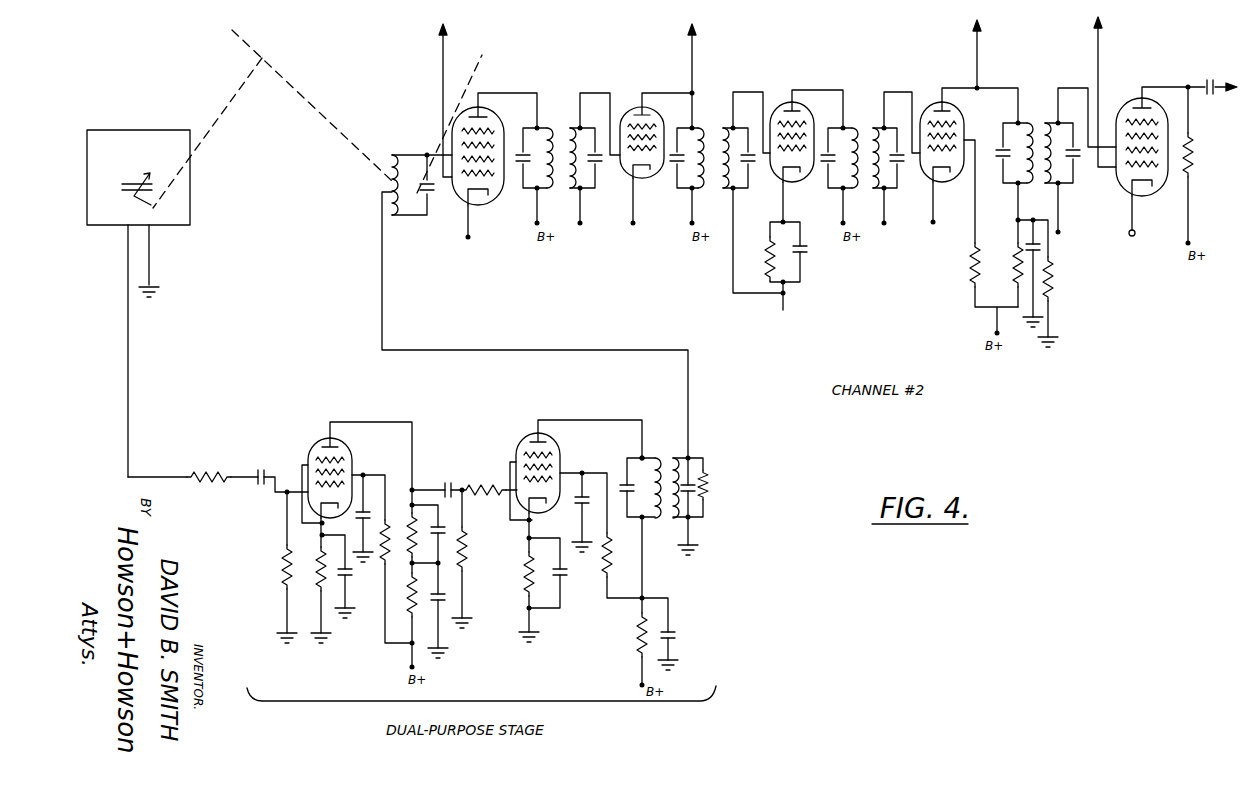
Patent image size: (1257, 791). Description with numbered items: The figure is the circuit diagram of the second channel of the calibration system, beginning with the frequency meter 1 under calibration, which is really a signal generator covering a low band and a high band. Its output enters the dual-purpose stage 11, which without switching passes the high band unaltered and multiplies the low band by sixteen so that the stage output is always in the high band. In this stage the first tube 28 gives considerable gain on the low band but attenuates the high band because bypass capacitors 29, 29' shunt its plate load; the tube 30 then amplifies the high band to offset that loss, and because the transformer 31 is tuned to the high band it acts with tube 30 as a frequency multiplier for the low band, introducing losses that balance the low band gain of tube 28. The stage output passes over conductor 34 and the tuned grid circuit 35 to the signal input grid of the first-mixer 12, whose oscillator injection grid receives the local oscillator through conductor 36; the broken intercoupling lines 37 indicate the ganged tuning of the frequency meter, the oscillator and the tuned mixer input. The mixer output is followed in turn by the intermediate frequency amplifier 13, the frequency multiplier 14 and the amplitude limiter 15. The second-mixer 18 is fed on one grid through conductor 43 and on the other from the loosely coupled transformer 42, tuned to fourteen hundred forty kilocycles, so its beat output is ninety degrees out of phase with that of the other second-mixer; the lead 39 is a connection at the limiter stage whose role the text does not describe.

The frequency meter 1 is at (126, 131).
The broken intercoupling lines 37 is at (216, 117).
The conductor 36 is at (443, 87).
The tuned grid circuit 35 is at (409, 155).
The conductor 34 is at (588, 350).
The first-mixer 12 is at (510, 83).
The intermediate frequency amplifier 13 is at (645, 83).
The frequency multiplier 14 is at (800, 83).
The amplitude limiter 15 is at (946, 83).
The antenna 39 is at (980, 52).
The transformer 42 is at (1041, 124).
The conductor 43 is at (1101, 53).
The second-mixer 18 is at (1154, 78).
The first tube 28 is at (349, 458).
The bypass capacitor 29 is at (435, 535).
The bypass capacitor 29' is at (469, 610).
The tube 30 is at (561, 453).
The transformer 31 is at (661, 457).
The dual-purpose stage 11 is at (500, 687).